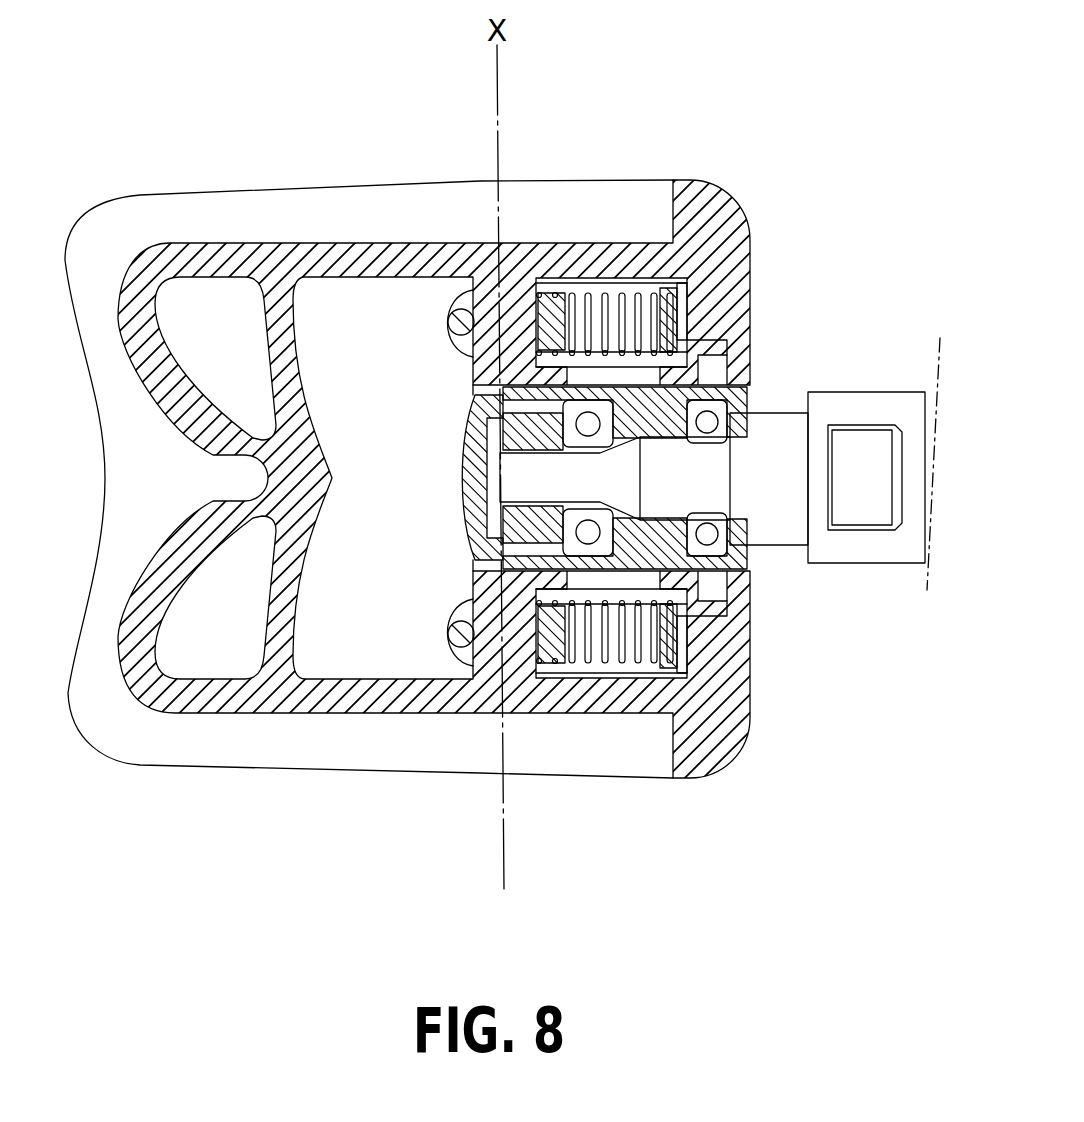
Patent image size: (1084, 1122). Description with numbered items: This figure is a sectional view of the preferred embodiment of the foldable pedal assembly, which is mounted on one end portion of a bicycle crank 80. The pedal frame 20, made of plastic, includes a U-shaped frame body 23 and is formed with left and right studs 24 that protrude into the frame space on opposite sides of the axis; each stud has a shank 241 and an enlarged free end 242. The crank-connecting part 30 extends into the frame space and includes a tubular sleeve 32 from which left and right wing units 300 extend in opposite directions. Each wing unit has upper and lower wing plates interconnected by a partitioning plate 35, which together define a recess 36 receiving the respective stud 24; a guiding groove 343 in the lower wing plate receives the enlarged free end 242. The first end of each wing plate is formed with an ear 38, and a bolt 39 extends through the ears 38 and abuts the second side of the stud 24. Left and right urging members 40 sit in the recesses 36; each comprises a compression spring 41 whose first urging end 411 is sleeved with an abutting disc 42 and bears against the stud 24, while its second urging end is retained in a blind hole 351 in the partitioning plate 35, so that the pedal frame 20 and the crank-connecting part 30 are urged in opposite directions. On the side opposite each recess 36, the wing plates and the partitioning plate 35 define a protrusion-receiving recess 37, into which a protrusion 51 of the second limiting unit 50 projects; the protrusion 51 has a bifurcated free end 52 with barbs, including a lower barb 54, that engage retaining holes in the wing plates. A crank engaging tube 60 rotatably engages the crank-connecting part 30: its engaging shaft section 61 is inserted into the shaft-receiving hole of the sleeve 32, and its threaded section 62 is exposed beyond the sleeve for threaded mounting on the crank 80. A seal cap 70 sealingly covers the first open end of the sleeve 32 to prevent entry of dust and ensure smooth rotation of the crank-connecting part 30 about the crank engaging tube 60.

The pedal frame 20 is at (262, 185).
The U-shaped frame body 23 is at (200, 193).
The left and right studs 24 is at (473, 290).
The shank 241 is at (473, 692).
The enlarged free end 242 is at (560, 575).
The crank-connecting part 30 is at (660, 280).
The left and right wing units 300 is at (704, 626).
The tubular sleeve 32 is at (752, 583).
The guiding groove 343 is at (600, 582).
The partitioning plate 35 is at (723, 270).
The blind hole 351 is at (687, 280).
The left and right recesses 36 is at (587, 280).
The protrusion-receiving recess 37 is at (720, 265).
The ear 38 is at (446, 305).
The left and right bolts 39 is at (450, 318).
The left and right urging members 40 is at (607, 280).
The compression spring 41 is at (630, 260).
The first urging end 411 is at (590, 266).
The abutting disc 42 is at (547, 297).
The second limiting unit 50 is at (772, 330).
The left and right protrusions 51 is at (730, 278).
The bifurcated free end 52 is at (730, 310).
The lower barb 54 is at (712, 372).
The crank engaging tube 60 is at (853, 400).
The engaging shaft section 61 is at (745, 550).
The threaded section 62 is at (880, 443).
The seal cap 70 is at (467, 512).
The bicycle crank 80 is at (940, 444).